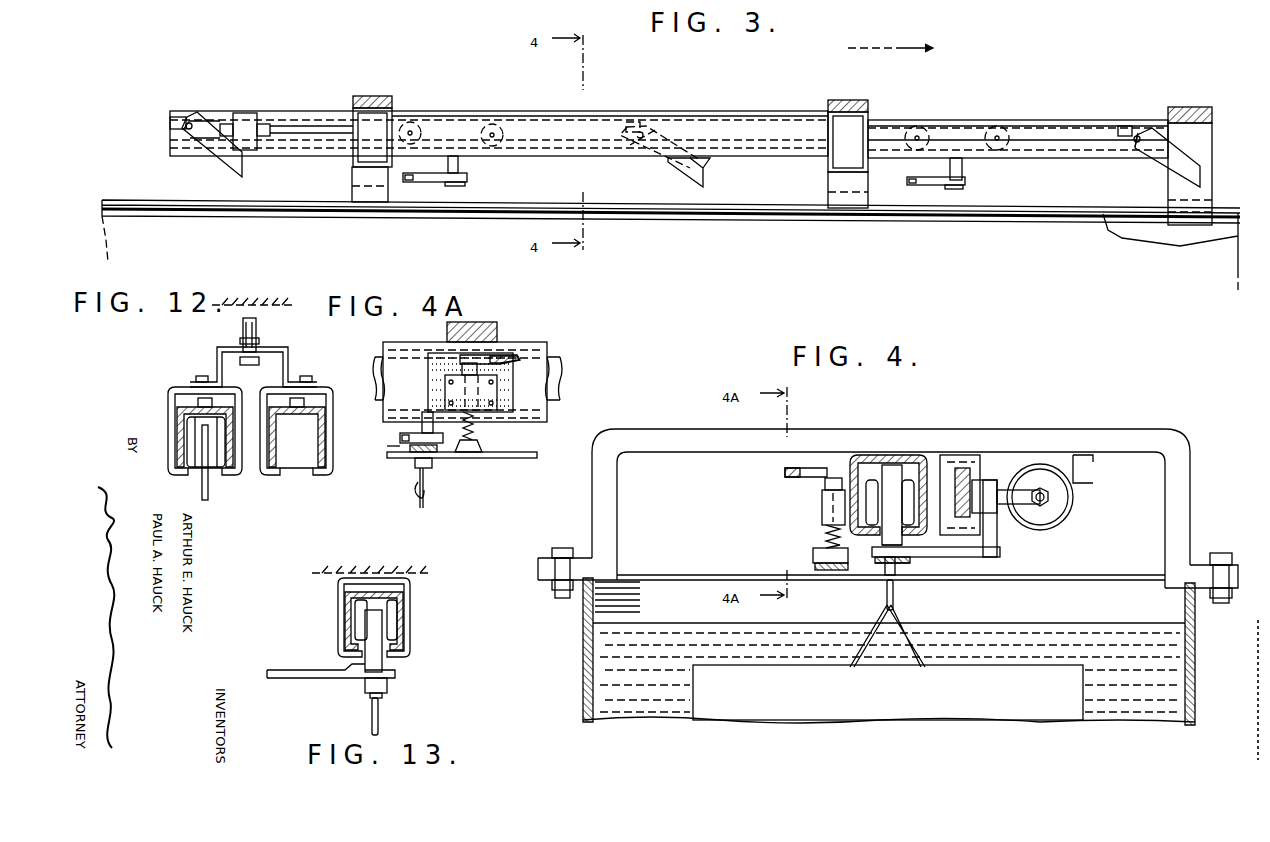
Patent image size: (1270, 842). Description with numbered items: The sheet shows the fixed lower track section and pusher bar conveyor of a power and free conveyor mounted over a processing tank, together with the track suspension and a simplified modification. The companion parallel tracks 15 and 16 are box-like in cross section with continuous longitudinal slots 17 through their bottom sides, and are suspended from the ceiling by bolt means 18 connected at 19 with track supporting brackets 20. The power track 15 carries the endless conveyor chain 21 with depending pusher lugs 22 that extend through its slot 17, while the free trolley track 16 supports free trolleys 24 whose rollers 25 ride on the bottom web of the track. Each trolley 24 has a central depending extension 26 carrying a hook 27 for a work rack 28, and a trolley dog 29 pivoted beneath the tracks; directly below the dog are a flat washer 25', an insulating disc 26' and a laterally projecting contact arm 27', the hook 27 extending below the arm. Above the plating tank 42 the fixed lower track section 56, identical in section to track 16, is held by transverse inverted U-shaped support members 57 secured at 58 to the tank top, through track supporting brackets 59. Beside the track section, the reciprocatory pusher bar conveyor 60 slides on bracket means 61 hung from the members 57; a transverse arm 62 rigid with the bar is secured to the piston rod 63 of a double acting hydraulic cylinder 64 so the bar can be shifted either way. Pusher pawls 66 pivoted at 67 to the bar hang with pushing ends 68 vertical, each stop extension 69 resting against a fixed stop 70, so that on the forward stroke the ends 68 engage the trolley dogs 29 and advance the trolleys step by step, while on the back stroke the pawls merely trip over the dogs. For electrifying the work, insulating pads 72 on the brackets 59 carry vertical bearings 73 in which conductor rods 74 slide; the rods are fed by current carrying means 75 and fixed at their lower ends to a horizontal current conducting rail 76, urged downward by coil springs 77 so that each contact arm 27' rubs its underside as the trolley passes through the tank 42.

In FIG. 12, the power track 15 is at (200, 400).
In FIG. 12, the free trolley track 16 is at (318, 418).
In FIG. 12, the longitudinal slot 17 is at (196, 472).
In FIG. 12, the bolt means 18 is at (258, 325).
In FIG. 12, the connection 19 is at (230, 360).
In FIG. 12, the track supporting bracket 20 is at (316, 385).
In FIG. 12, the conveyor chain 21 is at (200, 440).
In FIG. 12, the pusher lug 22 is at (209, 490).
In FIG. 3, the free trolley 24 is at (452, 130).
In FIG. 13, the free trolley 24 is at (380, 623).
In FIG. 4, the free trolley 24 is at (891, 480).
In FIG. 3, the roller 25 is at (745, 119).
In FIG. 4, the roller 25 is at (881, 467).
In FIG. 4A, the flat washer 25' is at (372, 455).
In FIG. 4, the flat washer 25' is at (877, 576).
In FIG. 3, the depending extension 26 is at (727, 170).
In FIG. 4A, the depending extension 26 is at (414, 411).
In FIG. 13, the depending extension 26 is at (411, 641).
In FIG. 4, the depending extension 26 is at (912, 537).
In FIG. 4A, the insulating disc 26' is at (445, 461).
In FIG. 4, the insulating disc 26' is at (906, 581).
In FIG. 4A, the hook 27 is at (447, 488).
In FIG. 13, the hook 27 is at (402, 716).
In FIG. 4, the hook 27 is at (863, 595).
In FIG. 4A, the contact arm 27' is at (404, 467).
In FIG. 4, the contact arm 27' is at (847, 576).
In FIG. 4A, the work rack 28 is at (416, 503).
In FIG. 4, the work rack 28 is at (920, 640).
In FIG. 3, the trolley dog 29 is at (415, 182).
In FIG. 4A, the trolley dog 29 is at (400, 438).
In FIG. 13, the trolley dog 29 is at (345, 678).
In FIG. 4, the trolley dog 29 is at (920, 555).
In FIG. 3, the plating tank 42 is at (112, 241).
In FIG. 4, the plating tank 42 is at (585, 660).
In FIG. 3, the fixed lower track section 56 is at (1050, 120).
In FIG. 4A, the fixed lower track section 56 is at (552, 362).
In FIG. 13, the fixed lower track section 56 is at (406, 612).
In FIG. 4, the fixed lower track section 56 is at (905, 465).
In FIG. 3, the support member 57 is at (377, 96).
In FIG. 4A, the support member 57 is at (492, 322).
In FIG. 13, the support member 57 is at (355, 573).
In FIG. 4, the support member 57 is at (1090, 445).
In FIG. 4, the securing point 58 is at (556, 550).
In FIG. 4A, the track supporting bracket 59 is at (545, 350).
In FIG. 13, the track supporting bracket 59 is at (412, 588).
In FIG. 4, the track supporting bracket 59 is at (935, 462).
In FIG. 3, the pusher bar conveyor 60 is at (1018, 128).
In FIG. 4, the pusher bar conveyor 60 is at (966, 480).
In FIG. 4, the bracket means 61 is at (950, 468).
In FIG. 3, the transverse arm 62 is at (243, 113).
In FIG. 4, the transverse arm 62 is at (1030, 518).
In FIG. 3, the piston rod 63 is at (324, 125).
In FIG. 4, the piston rod 63 is at (1050, 495).
In FIG. 3, the hydraulic cylinder 64 is at (505, 111).
In FIG. 4, the hydraulic cylinder 64 is at (1070, 515).
In FIG. 3, the pusher pawl 66 is at (228, 160).
In FIG. 4, the pusher pawl 66 is at (996, 540).
In FIG. 3, the pawl pivot 67 is at (182, 136).
In FIG. 4, the pawl pivot 67 is at (1008, 492).
In FIG. 3, the pushing end 68 is at (708, 172).
In FIG. 3, the stop extension 69 is at (186, 126).
In FIG. 3, the fixed stop 70 is at (172, 116).
In FIG. 4A, the insulating pad 72 is at (514, 386).
In FIG. 4, the insulating pad 72 is at (853, 465).
In FIG. 4A, the bearing 73 is at (497, 395).
In FIG. 4, the bearing 73 is at (822, 500).
In FIG. 4A, the conductor rod 74 is at (462, 368).
In FIG. 4, the conductor rod 74 is at (813, 543).
In FIG. 4A, the current carrying means 75 is at (487, 360).
In FIG. 4, the current carrying means 75 is at (788, 468).
In FIG. 4A, the current conducting rail 76 is at (520, 452).
In FIG. 4, the current conducting rail 76 is at (815, 566).
In FIG. 4A, the coil spring 77 is at (476, 430).
In FIG. 4, the coil spring 77 is at (824, 528).